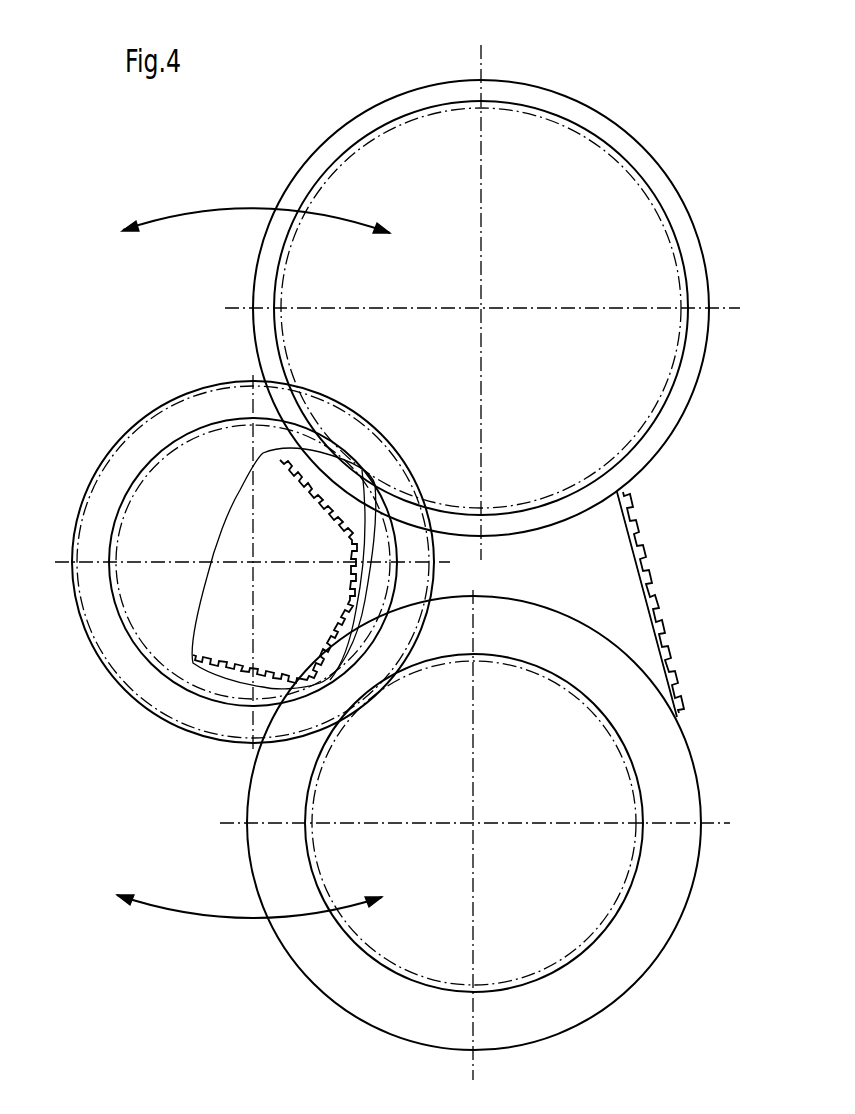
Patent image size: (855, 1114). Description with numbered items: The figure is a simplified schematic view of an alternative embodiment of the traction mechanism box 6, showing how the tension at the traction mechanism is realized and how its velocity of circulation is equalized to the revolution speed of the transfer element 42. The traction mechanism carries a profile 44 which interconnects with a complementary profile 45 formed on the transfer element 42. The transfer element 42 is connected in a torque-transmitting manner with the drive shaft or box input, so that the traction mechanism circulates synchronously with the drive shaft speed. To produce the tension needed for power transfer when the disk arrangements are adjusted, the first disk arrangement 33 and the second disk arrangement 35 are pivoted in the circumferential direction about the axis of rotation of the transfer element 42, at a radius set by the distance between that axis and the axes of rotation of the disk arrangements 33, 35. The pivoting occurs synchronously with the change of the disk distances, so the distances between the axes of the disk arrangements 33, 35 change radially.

The first disk arrangement 33 is at (610, 142).
The second disk arrangement 35 is at (633, 937).
The transfer element 42 is at (307, 526).
The profile 44 is at (645, 583).
The profile 45 is at (305, 465).
The traction mechanism box 6 is at (668, 527).